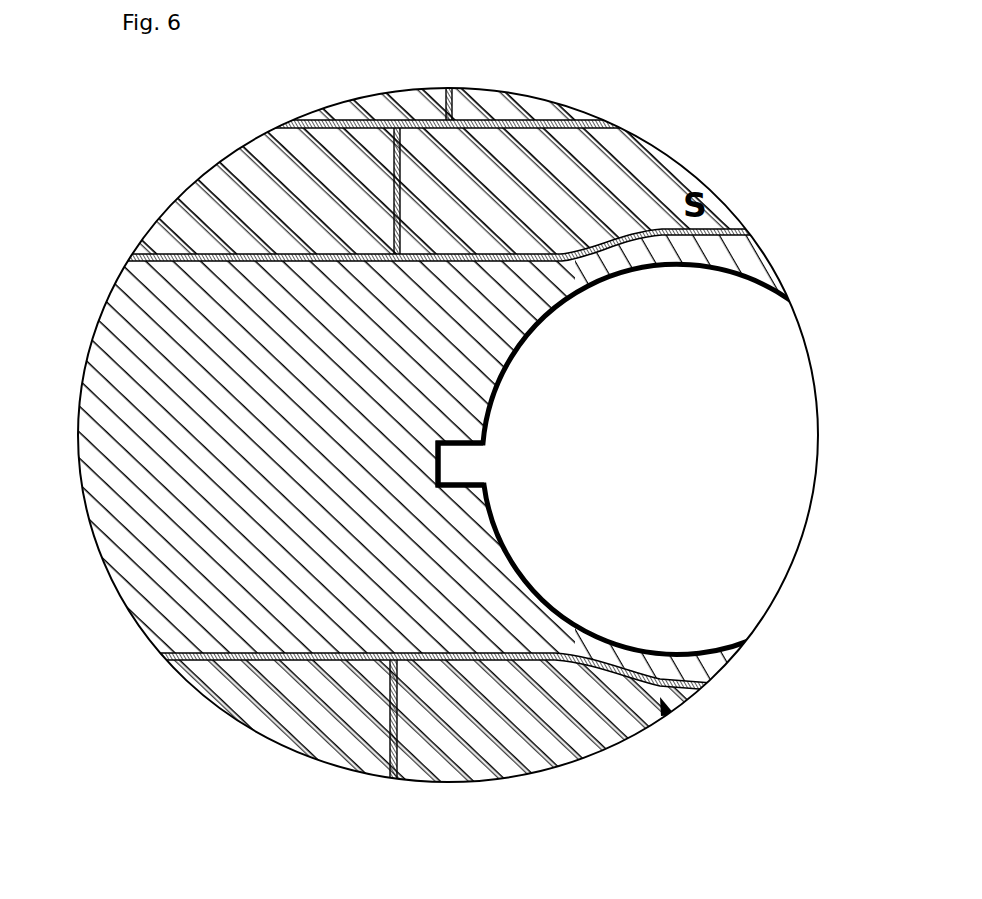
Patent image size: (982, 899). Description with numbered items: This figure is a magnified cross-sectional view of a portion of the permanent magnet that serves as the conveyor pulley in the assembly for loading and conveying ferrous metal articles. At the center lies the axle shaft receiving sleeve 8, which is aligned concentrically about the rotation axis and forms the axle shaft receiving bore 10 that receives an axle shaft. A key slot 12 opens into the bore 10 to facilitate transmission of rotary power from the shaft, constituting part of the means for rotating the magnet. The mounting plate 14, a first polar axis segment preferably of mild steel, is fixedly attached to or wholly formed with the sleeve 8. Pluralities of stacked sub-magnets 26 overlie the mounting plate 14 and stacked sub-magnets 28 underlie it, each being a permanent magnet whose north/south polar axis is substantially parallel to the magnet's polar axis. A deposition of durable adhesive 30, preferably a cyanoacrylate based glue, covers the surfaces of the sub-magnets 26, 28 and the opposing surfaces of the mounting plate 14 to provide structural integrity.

The axle shaft receiving sleeve 8 is at (742, 255).
The axle shaft receiving bore 10 is at (728, 598).
The key slot 12 is at (463, 462).
The mounting plate 14 is at (210, 437).
The stacked sub-magnets 26 is at (408, 105).
The stacked sub-magnets 28 is at (325, 735).
The durable adhesive 30 is at (325, 256).